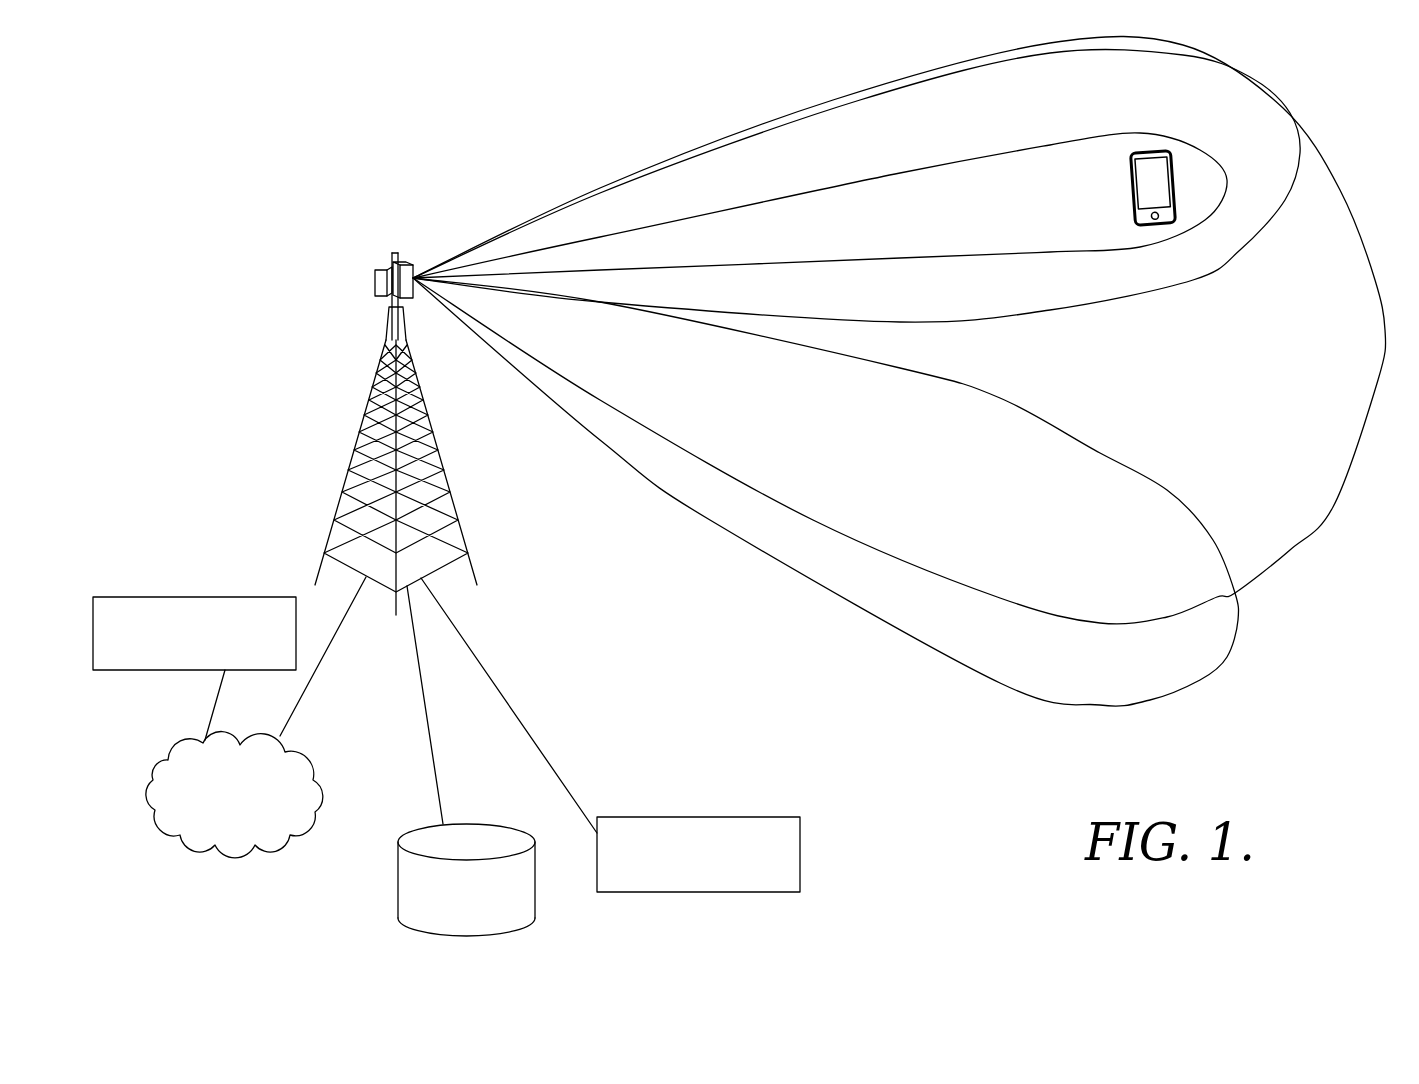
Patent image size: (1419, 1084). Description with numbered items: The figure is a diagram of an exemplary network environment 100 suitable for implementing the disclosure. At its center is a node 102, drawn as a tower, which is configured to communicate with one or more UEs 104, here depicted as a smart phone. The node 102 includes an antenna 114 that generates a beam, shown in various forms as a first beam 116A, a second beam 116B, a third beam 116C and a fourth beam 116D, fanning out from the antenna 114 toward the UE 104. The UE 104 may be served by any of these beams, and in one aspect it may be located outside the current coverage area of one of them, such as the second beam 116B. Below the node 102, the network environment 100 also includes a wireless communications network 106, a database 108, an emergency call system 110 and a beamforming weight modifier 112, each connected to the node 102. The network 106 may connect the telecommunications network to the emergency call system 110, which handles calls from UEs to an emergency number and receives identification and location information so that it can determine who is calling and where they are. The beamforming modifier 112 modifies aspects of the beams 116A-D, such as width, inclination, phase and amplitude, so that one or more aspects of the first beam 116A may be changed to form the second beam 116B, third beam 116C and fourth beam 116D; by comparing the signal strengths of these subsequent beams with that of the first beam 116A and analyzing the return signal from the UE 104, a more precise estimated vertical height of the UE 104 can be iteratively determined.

The network environment 100 is at (266, 193).
The node 102 is at (373, 418).
The UE 104 is at (1130, 194).
The wireless communications network 106 is at (230, 848).
The database 108 is at (452, 937).
The emergency call system 110 is at (194, 597).
The beamforming weight modifier 112 is at (802, 855).
The antenna 114 is at (374, 283).
The first beam 116A is at (1332, 168).
The second beam 116B is at (1228, 655).
The third beam 116C is at (1278, 220).
The fourth beam 116D is at (1160, 135).